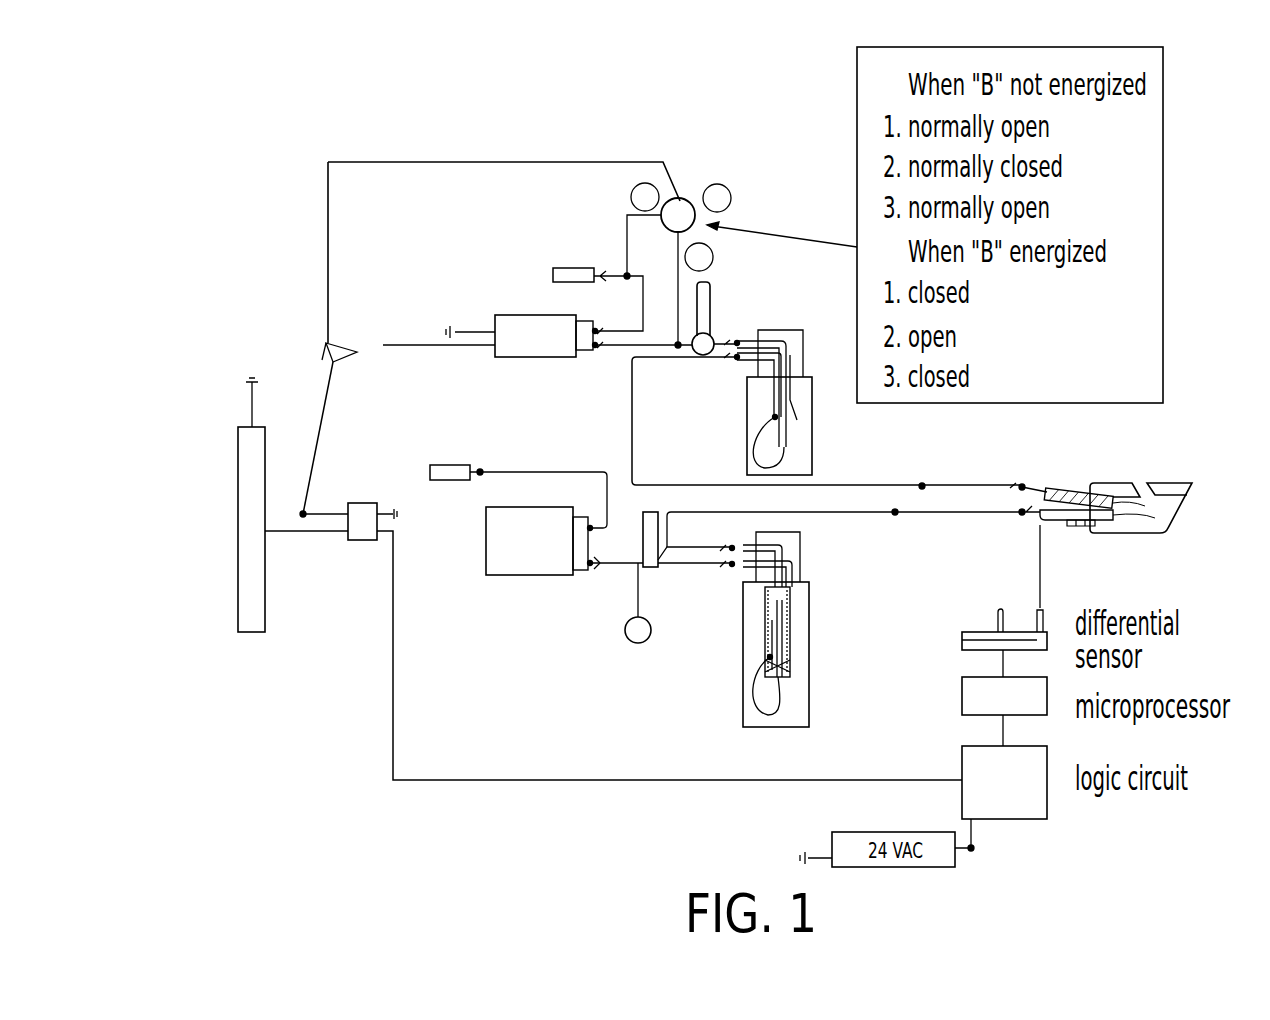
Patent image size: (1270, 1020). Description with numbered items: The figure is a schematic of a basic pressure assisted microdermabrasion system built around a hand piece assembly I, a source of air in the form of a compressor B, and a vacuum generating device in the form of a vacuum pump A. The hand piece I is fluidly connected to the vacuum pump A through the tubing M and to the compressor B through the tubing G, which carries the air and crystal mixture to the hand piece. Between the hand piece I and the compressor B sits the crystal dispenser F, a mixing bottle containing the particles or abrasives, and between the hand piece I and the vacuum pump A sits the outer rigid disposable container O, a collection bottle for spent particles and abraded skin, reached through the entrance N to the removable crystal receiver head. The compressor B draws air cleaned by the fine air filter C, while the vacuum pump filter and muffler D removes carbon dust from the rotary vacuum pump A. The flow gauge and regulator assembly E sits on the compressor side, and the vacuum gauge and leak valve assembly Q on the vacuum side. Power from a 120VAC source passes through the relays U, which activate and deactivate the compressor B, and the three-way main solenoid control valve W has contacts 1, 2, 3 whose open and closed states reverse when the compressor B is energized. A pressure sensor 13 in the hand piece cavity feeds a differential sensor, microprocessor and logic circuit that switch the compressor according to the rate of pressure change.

The vacuum pump A is at (518, 577).
The compressor B is at (540, 315).
The 0.2 micron air filter C is at (591, 254).
The vacuum pump filter and muffler D is at (518, 475).
The air flow or crystal flow gauge and pressure regulator or needle valve/relief val E is at (716, 318).
The crystal dispenser F is at (786, 402).
The tubing carrying air/crystal mixture to hand piece G is at (950, 480).
The hand piece assembly I is at (1203, 476).
The tubing for handpiece to primary filter M is at (950, 518).
The entrance to removable crystal receiver head N is at (652, 568).
The outer rigid disposable container O is at (779, 629).
The vacuum gauge, flow gauge, and vacuum leak valve assembly Q is at (638, 624).
The relays U is at (655, 641).
The 3-way main solenoid control valve W is at (679, 245).
The pressure sensor in handpiece cavity 13 is at (1080, 530).
The first contact of solenoid valve 1 is at (699, 257).
The second contact of solenoid valve 2 is at (717, 198).
The third contact of solenoid valve 3 is at (645, 197).
The 120VAC power source 120VAC is at (254, 521).